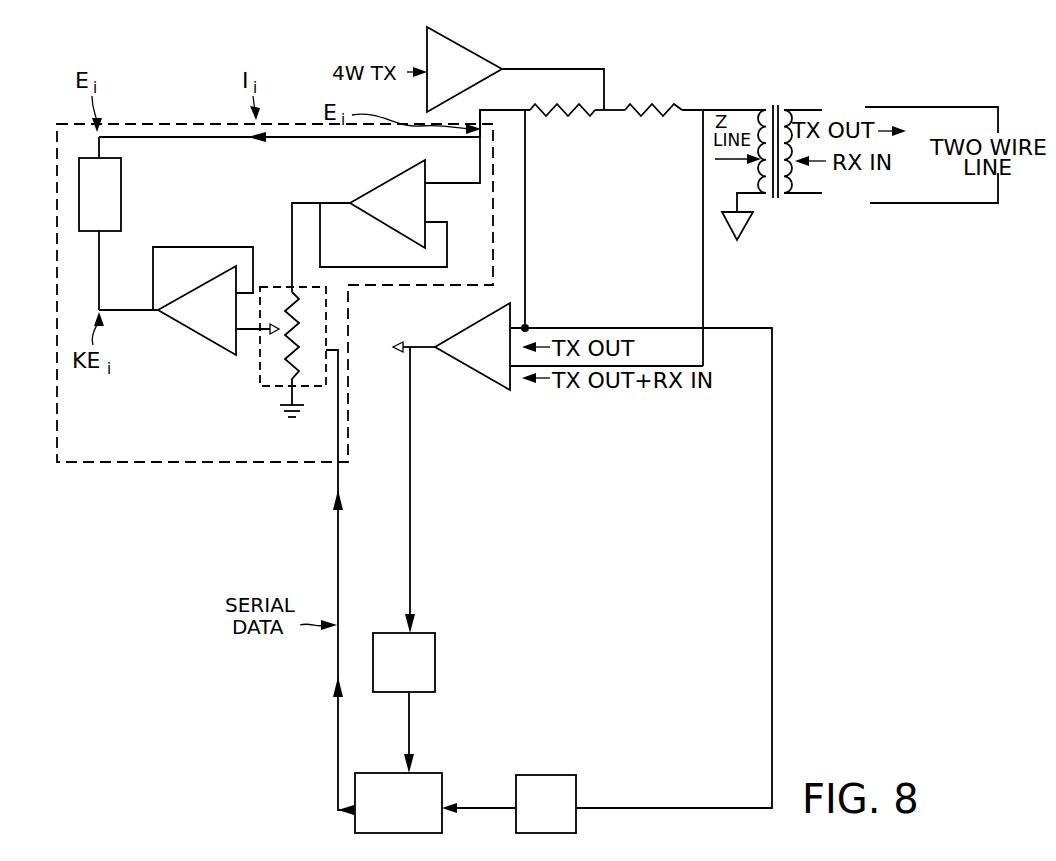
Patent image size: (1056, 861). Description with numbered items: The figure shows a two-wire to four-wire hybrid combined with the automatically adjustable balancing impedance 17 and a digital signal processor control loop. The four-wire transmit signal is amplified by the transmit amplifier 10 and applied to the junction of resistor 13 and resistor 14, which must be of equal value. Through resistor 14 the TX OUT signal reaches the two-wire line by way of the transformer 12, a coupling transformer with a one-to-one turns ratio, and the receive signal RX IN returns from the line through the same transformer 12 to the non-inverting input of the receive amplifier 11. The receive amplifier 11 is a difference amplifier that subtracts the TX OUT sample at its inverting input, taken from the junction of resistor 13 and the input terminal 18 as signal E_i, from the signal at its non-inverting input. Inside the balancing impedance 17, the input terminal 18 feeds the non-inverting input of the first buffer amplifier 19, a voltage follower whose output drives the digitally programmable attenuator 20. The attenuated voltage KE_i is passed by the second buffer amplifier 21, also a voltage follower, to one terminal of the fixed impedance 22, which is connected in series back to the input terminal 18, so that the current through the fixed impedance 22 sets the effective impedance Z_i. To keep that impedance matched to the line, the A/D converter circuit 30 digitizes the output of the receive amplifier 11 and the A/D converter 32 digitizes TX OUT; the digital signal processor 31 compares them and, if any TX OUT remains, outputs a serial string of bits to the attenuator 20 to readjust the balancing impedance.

The transmit amplifier 10 is at (465, 40).
The receive amplifier 11 is at (472, 372).
The transformer 12 is at (776, 200).
The resistor 13 is at (554, 117).
The resistor 14 is at (650, 117).
The balancing impedance 17 is at (190, 116).
The input terminal 18 is at (483, 104).
The first buffer amplifier 19 is at (381, 188).
The digitally programmable attenuator 20 is at (262, 388).
The second buffer amplifier 21 is at (206, 340).
The fixed impedance 22 is at (121, 195).
The A/D converter circuit 30 is at (435, 662).
The digital signal processor 31 is at (442, 773).
The A/D converter 32 is at (576, 790).